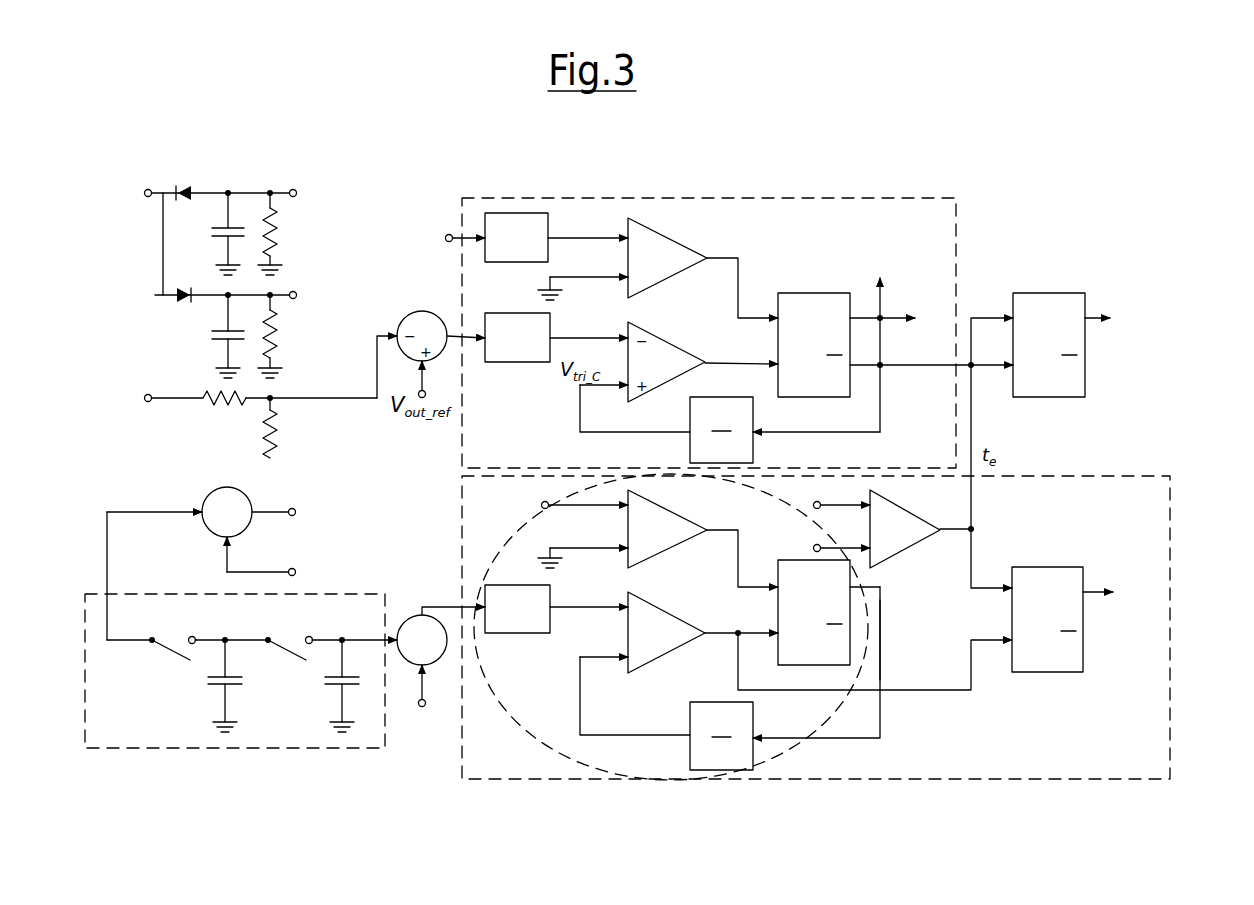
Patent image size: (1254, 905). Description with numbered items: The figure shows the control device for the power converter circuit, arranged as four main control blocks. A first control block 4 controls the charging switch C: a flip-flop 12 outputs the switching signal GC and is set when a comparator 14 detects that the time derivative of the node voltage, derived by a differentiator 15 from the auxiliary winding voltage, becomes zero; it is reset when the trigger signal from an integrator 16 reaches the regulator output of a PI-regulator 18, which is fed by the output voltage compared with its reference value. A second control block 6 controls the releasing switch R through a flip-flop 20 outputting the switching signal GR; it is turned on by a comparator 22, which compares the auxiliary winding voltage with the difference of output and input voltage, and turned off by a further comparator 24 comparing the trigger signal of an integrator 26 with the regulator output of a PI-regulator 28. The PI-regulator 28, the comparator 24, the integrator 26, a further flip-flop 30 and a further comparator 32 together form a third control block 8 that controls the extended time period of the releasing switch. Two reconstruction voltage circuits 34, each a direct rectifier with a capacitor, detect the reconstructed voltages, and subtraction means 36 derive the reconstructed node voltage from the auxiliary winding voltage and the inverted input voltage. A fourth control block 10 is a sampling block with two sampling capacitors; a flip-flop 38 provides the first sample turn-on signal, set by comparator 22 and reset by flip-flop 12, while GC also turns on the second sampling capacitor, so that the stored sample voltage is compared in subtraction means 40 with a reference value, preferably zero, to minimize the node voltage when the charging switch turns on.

The first control block 4 is at (802, 203).
The second control block 6 is at (975, 781).
The third control block 8 is at (885, 642).
The fourth control block 10 is at (215, 748).
The flip-flop 12 is at (795, 293).
The comparator 14 is at (680, 246).
The differentiator 15 is at (532, 227).
The integrator 16 is at (755, 447).
The PI-regulator 18 is at (507, 325).
The flip-flop 20 is at (1070, 660).
The comparator 22 is at (940, 523).
The comparator 24 is at (688, 645).
The integrator 26 is at (742, 742).
The PI-regulator 28 is at (530, 633).
The flip-flop 30 is at (837, 652).
The comparator 32 is at (657, 513).
The reconstruction voltage circuit 34 is at (258, 190).
The subtraction means 36 is at (232, 487).
The flip-flop 38 is at (1047, 292).
The subtraction means 40 is at (413, 615).